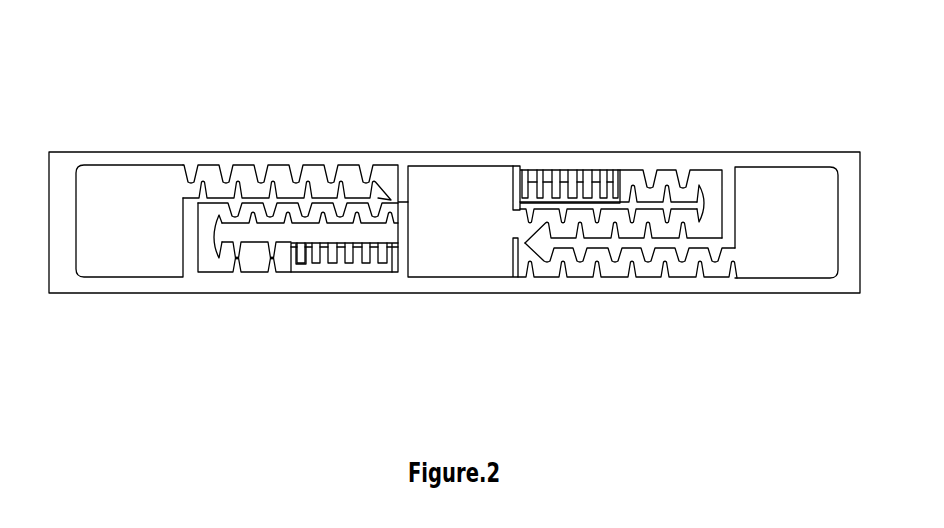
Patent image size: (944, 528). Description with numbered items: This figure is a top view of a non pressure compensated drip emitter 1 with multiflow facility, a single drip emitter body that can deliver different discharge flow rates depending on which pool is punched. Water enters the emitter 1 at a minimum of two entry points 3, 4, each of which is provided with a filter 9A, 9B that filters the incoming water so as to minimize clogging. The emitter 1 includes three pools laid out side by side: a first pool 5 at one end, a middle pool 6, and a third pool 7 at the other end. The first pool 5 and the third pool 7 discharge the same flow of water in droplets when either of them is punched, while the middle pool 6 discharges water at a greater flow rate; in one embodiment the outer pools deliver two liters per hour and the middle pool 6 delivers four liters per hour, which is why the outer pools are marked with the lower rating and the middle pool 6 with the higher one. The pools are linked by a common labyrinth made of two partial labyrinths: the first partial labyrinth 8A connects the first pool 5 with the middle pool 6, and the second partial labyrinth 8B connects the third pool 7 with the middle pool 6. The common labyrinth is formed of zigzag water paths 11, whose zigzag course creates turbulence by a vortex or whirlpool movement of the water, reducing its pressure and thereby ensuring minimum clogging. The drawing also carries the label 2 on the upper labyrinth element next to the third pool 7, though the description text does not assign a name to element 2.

The non pressure compensated drip emitter 1 is at (417, 113).
The first meander radiating element 2 is at (236, 152).
The entry point 3 is at (565, 170).
The entry point 4 is at (333, 266).
The first pool 5 is at (772, 278).
The middle pool 6 is at (459, 277).
The third pool 7 is at (117, 277).
The first partial labyrinth 8A is at (668, 248).
The second partial labyrinth 8B is at (250, 272).
The filter 9A is at (590, 190).
The filter 9B is at (298, 258).
The zigzag water paths 11 is at (614, 278).